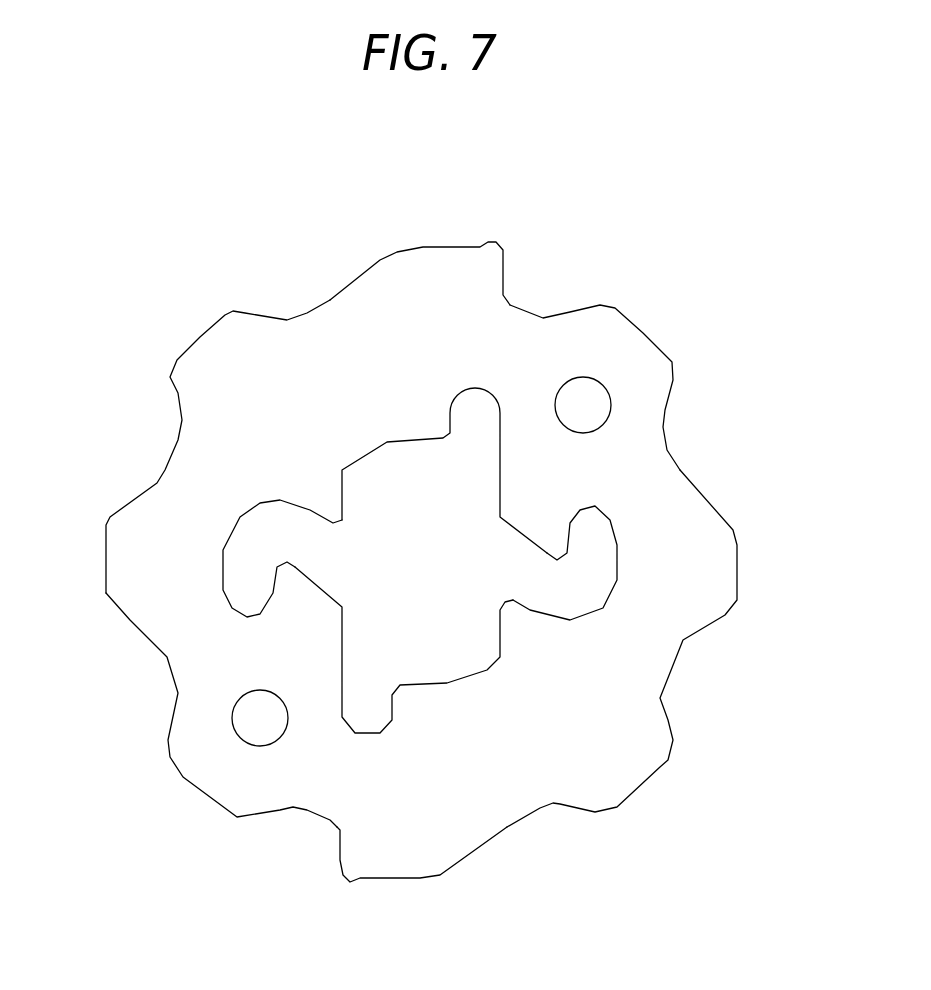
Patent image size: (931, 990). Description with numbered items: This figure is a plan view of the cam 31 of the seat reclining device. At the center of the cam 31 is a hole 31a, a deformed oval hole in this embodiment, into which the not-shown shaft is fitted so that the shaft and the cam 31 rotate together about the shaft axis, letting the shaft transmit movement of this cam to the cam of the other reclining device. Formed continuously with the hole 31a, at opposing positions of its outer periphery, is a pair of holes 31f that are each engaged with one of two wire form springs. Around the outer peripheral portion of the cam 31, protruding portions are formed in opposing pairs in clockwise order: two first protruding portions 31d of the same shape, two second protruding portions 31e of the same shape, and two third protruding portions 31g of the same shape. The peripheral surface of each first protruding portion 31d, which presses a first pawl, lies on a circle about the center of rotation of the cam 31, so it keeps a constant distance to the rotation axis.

The cam 31 is at (599, 264).
The hole 31a is at (342, 640).
The first protruding portions 31d is at (210, 353).
The second protruding portions 31e is at (445, 268).
The holes 31f is at (620, 523).
The third protruding portions 31g is at (630, 345).